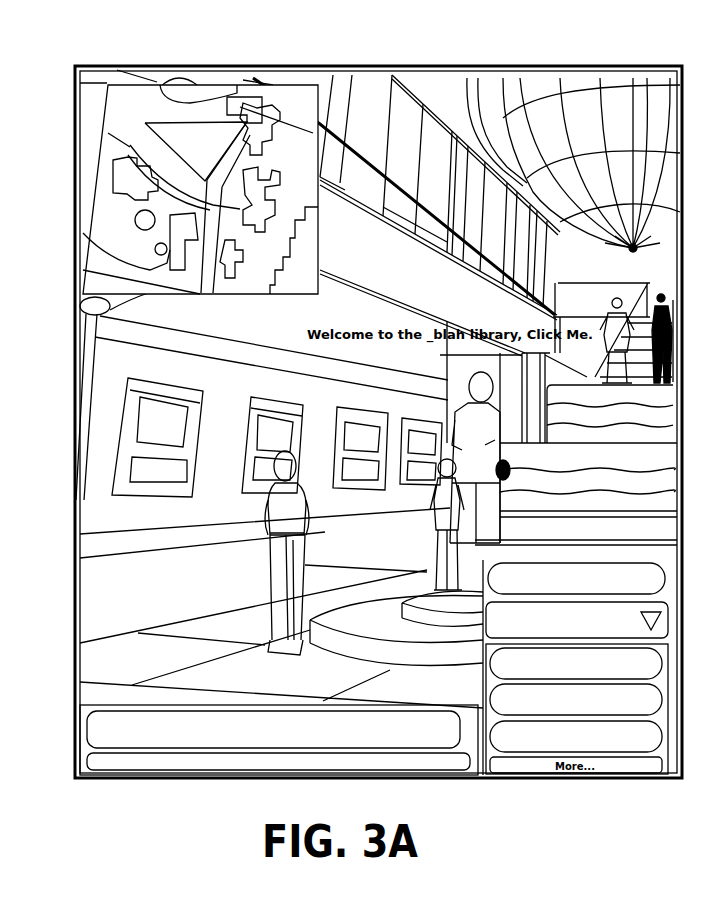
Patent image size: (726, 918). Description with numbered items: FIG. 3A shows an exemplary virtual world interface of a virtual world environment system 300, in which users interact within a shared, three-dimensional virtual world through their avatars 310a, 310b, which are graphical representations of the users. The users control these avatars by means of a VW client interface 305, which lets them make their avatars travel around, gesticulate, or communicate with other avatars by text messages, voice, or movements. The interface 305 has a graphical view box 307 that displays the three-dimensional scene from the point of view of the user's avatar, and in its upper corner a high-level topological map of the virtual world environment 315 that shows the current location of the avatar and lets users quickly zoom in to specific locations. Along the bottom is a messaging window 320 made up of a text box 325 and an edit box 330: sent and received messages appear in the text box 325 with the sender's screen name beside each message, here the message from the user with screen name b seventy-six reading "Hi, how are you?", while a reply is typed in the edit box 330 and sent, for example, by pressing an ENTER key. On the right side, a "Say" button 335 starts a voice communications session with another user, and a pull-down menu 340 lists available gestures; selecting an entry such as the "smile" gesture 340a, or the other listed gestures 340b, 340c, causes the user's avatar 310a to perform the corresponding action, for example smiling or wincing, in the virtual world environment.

The virtual world environment system 300 is at (116, 52).
The VW client interface 305 is at (396, 70).
The graphical view box 307 is at (417, 278).
The avatar 310a is at (263, 560).
The avatar 310b is at (426, 530).
The topological map of the virtual world environment 315 is at (212, 151).
The messaging window 320 is at (70, 704).
The text box 325 is at (308, 736).
The edit box 330 is at (179, 773).
The "Say" button 335 is at (485, 591).
The pull-down menu 340 is at (488, 630).
The "smile" gesture 340a is at (492, 676).
The Handshake gesture option 340b is at (496, 693).
The Wince gesture option 340c is at (493, 741).